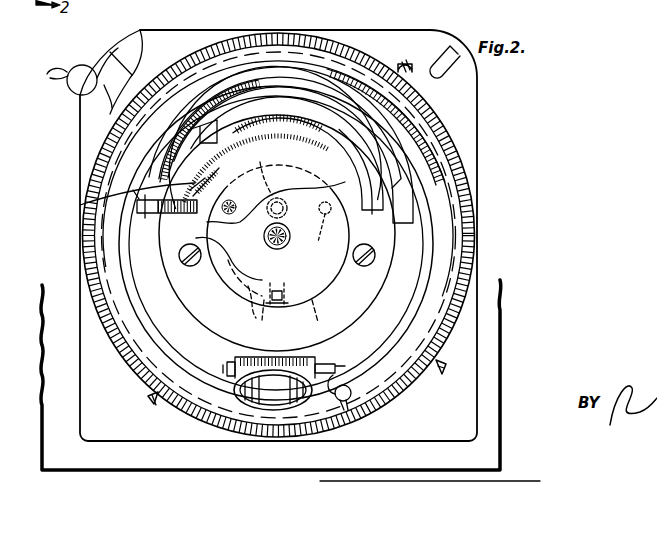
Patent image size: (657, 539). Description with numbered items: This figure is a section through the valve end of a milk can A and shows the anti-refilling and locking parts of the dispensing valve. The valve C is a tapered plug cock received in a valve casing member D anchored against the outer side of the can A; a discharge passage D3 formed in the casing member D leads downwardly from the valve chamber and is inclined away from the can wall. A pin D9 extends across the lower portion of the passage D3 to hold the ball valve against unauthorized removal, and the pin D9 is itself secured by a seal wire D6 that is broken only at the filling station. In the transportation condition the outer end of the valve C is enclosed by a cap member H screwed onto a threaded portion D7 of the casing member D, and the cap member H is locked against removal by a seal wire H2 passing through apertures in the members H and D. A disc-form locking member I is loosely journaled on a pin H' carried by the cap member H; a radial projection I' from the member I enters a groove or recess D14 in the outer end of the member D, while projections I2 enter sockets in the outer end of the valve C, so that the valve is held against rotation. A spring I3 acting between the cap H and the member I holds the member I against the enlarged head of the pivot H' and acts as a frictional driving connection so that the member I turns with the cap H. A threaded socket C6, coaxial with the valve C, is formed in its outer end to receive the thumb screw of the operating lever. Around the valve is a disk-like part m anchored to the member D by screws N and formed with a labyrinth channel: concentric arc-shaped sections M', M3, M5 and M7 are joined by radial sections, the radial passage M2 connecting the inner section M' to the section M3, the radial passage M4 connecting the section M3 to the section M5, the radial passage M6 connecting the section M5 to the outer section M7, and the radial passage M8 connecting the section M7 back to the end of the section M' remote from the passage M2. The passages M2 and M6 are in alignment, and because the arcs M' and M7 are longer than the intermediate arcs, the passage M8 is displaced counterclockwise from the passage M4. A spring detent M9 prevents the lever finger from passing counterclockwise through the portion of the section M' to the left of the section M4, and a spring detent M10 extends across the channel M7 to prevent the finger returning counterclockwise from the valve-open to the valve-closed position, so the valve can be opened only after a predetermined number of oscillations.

The milk can A is at (500, 395).
The cap member H is at (291, 235).
The seal wire H2 is at (140, 30).
The pin H' is at (280, 249).
The valve casing member D is at (157, 350).
The threaded portion D7 is at (135, 335).
The discharge passage D3 is at (293, 397).
The pin D9 is at (337, 356).
The seal wire D6 is at (337, 376).
The groove or recess D14 is at (280, 317).
The disk like part m is at (398, 247).
The arc shaped labyrinth passage section M5 is at (302, 100).
The outer arc shaped labyrinth passage section M7 is at (332, 92).
The radial labyrinth passage M6 is at (397, 210).
The radial labyrinth passage M2 is at (370, 217).
The radial labyrinth passage M4 is at (196, 140).
The spring detent M10 is at (150, 202).
The radial labyrinth passage M8 is at (200, 213).
The spring detent M9 is at (210, 182).
The inner arc shaped labyrinth passage section M' is at (275, 137).
The arc shaped labyrinth passage section M3 is at (340, 170).
The valve C is at (272, 236).
The threaded socket C6 is at (261, 169).
The spring I3 is at (288, 210).
The projections I2 is at (231, 200).
The locking member I is at (256, 314).
The radial projection I' is at (321, 318).
The screws N is at (368, 292).